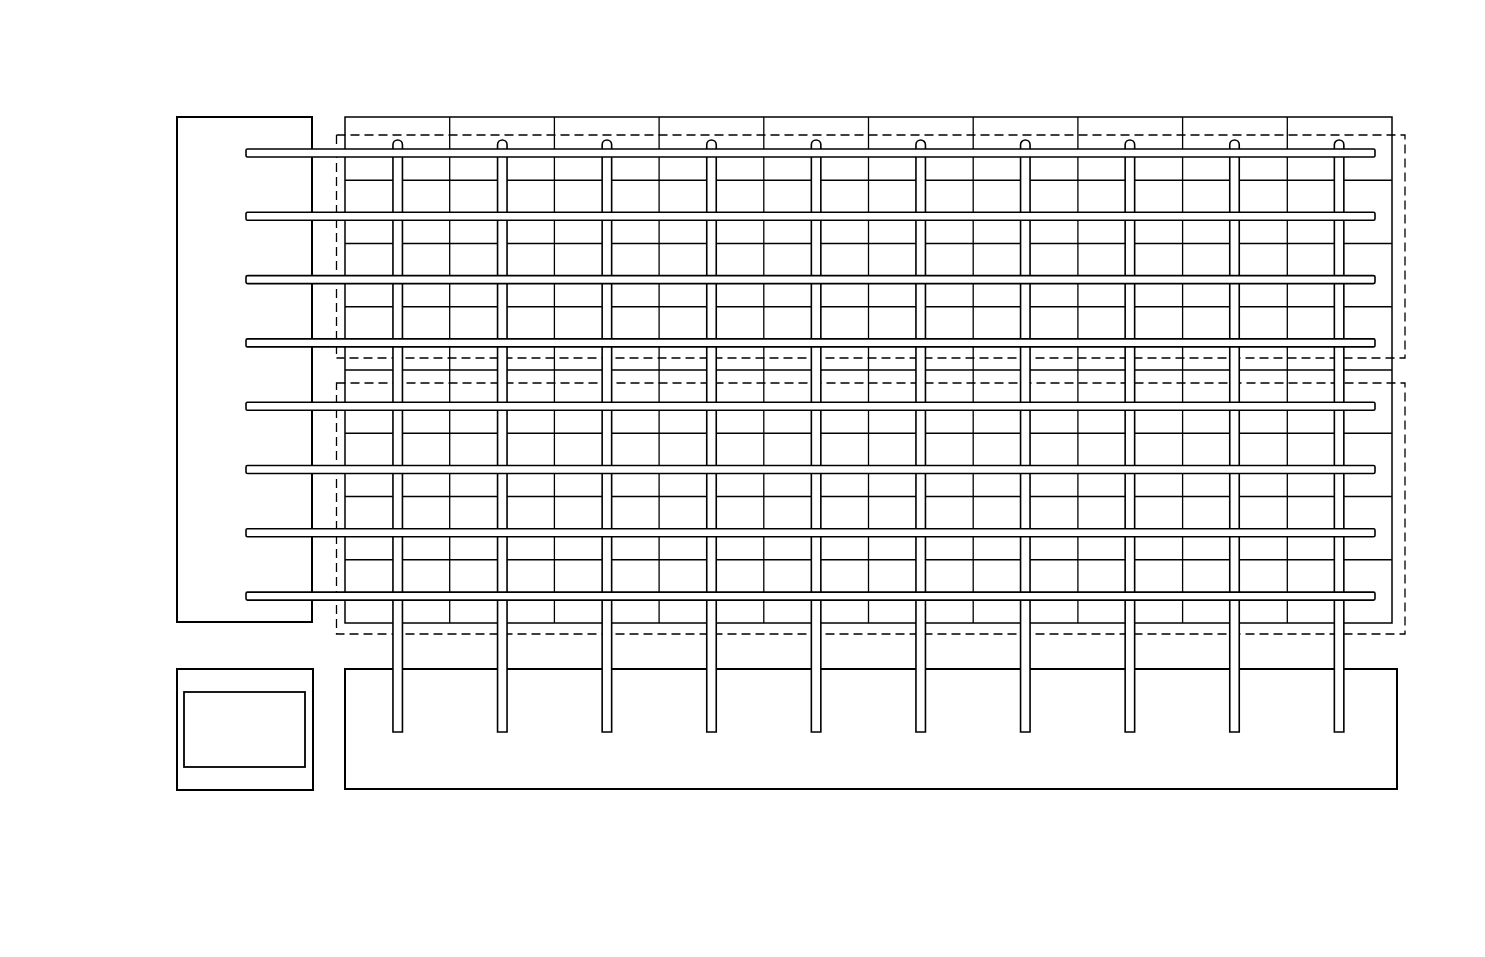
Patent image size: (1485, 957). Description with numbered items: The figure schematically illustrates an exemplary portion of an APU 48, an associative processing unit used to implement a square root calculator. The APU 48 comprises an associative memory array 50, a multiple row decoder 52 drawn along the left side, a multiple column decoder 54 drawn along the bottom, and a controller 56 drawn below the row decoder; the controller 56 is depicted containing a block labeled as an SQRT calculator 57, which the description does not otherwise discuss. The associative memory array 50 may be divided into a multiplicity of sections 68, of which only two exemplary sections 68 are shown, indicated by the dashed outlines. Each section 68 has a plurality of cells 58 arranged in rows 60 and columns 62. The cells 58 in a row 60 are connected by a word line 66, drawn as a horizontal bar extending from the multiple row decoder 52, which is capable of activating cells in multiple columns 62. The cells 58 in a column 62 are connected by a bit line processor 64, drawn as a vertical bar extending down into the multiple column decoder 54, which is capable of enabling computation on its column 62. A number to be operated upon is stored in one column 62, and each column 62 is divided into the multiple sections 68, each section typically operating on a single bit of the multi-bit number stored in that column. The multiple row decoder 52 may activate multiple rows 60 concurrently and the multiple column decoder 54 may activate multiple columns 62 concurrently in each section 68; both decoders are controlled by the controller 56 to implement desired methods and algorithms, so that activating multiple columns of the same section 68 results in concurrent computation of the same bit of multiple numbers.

The APU 48 is at (1312, 44).
The associative memory array 50 is at (1215, 117).
The multiple row decoder 52 is at (186, 316).
The multiple column decoder 54 is at (1292, 778).
The controller 56 is at (178, 745).
The SQRT calculator 57 is at (188, 725).
The cells 58 is at (423, 125).
The rows 60 is at (1396, 265).
The columns 62 is at (790, 110).
The bit line processor 64 is at (402, 705).
The word line 66 is at (1313, 410).
The sections 68 is at (336, 145).